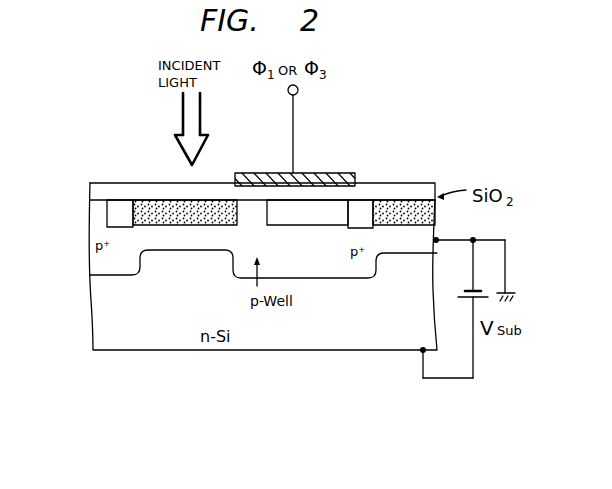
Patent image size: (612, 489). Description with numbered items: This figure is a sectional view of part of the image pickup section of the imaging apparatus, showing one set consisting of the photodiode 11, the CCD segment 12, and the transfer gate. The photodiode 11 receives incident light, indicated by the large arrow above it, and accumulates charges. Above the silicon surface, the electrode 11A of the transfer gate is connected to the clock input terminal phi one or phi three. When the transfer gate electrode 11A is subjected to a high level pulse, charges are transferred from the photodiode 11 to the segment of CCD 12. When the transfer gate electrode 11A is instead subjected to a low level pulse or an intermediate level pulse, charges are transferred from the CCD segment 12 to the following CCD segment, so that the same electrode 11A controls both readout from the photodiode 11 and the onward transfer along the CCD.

The photodiode 11 is at (183, 229).
The transfer gate electrode 11A is at (329, 170).
The CCD segment 12 is at (337, 232).